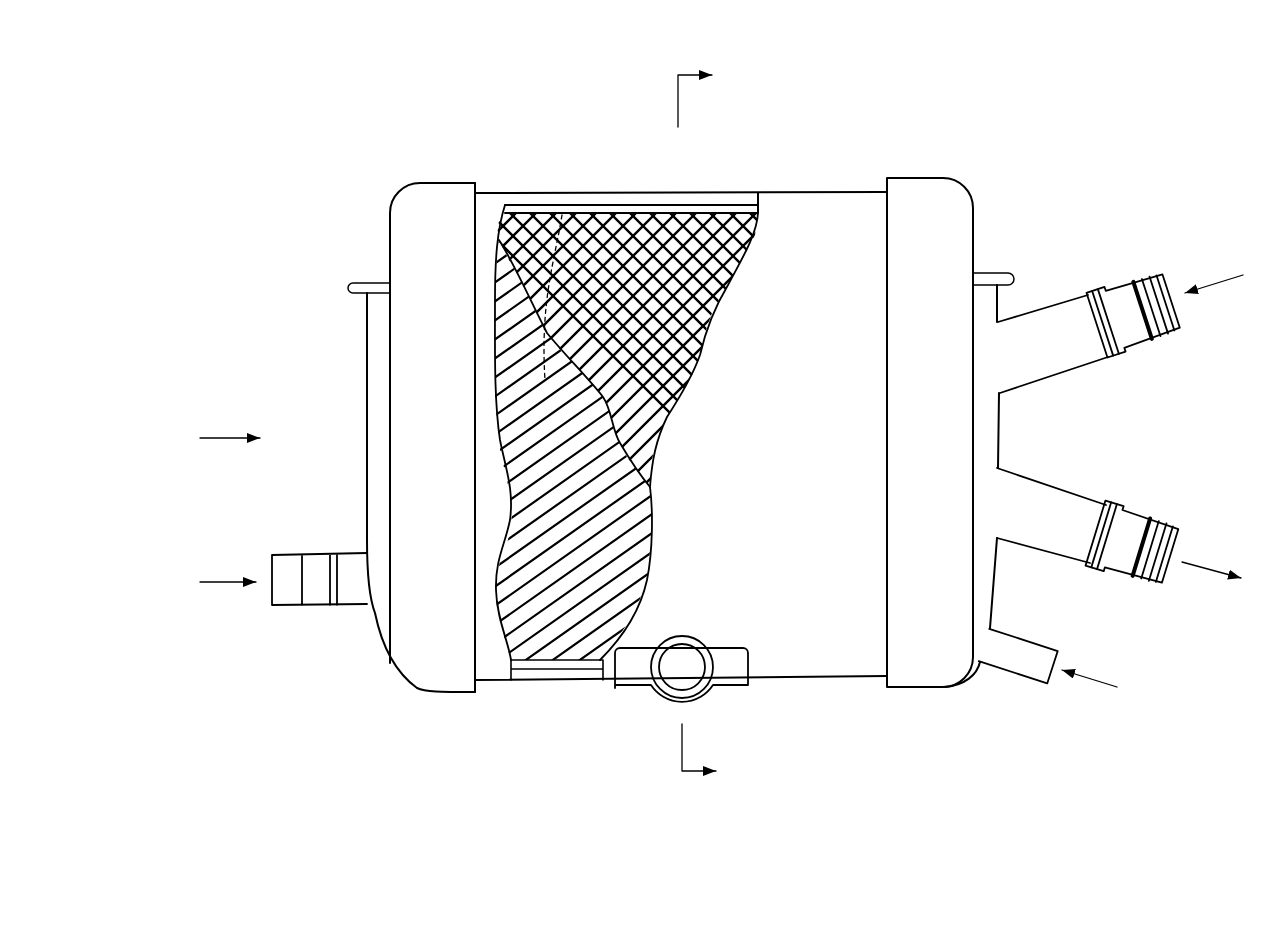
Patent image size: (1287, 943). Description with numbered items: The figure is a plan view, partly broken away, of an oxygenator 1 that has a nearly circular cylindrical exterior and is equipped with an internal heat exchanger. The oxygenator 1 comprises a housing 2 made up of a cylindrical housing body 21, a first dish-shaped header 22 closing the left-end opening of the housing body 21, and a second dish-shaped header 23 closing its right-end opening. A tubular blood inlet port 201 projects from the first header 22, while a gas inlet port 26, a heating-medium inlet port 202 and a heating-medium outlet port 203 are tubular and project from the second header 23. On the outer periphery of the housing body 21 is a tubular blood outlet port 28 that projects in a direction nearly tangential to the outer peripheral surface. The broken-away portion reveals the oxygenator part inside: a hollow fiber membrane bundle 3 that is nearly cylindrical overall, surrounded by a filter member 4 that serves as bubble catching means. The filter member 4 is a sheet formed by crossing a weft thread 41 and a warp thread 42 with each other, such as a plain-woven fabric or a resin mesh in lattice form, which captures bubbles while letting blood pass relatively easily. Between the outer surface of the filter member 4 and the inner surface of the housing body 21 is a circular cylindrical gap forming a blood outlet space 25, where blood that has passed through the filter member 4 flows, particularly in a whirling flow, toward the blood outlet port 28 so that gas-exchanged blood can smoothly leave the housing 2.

The oxygenator 1 is at (1030, 112).
The housing 2 is at (947, 174).
The hollow fiber membrane bundle 3 is at (560, 624).
The filter member 4 is at (634, 272).
The cylindrical housing body 21 is at (803, 190).
The first header 22 is at (443, 183).
The second header 23 is at (902, 176).
The blood outlet space 25 is at (722, 210).
The gas inlet port 26 is at (1020, 665).
The blood outlet port 28 is at (705, 668).
The weft thread 41 is at (700, 350).
The warp thread 42 is at (688, 312).
The blood inlet port 201 is at (286, 597).
The heating-medium inlet port 202 is at (1140, 330).
The heating-medium outlet port 203 is at (1140, 525).